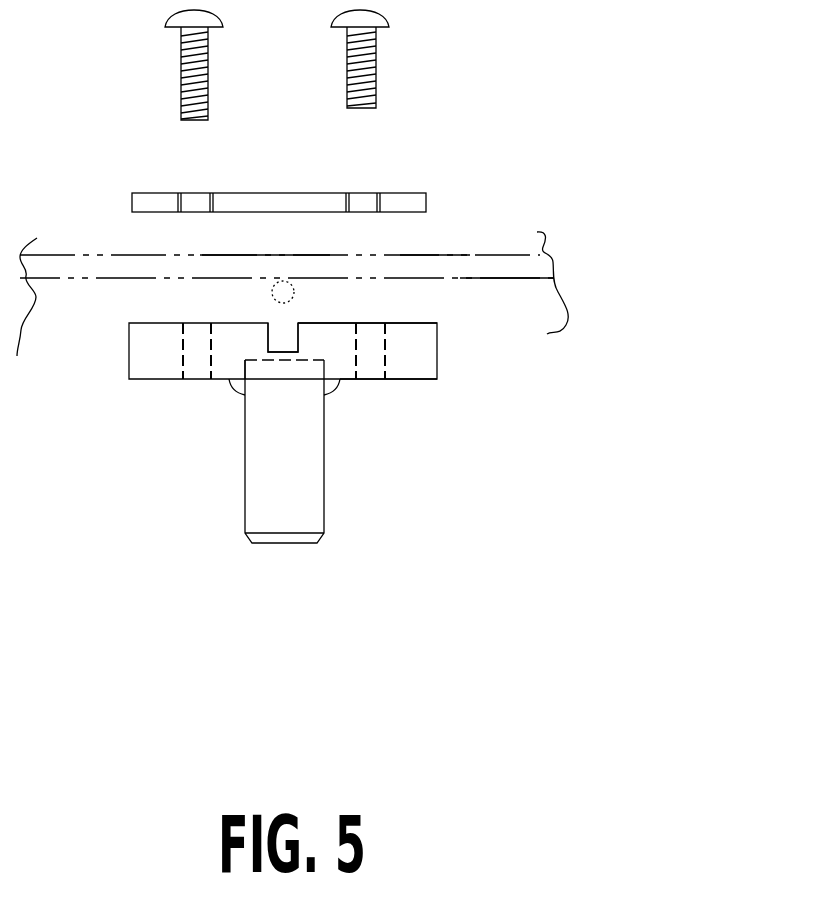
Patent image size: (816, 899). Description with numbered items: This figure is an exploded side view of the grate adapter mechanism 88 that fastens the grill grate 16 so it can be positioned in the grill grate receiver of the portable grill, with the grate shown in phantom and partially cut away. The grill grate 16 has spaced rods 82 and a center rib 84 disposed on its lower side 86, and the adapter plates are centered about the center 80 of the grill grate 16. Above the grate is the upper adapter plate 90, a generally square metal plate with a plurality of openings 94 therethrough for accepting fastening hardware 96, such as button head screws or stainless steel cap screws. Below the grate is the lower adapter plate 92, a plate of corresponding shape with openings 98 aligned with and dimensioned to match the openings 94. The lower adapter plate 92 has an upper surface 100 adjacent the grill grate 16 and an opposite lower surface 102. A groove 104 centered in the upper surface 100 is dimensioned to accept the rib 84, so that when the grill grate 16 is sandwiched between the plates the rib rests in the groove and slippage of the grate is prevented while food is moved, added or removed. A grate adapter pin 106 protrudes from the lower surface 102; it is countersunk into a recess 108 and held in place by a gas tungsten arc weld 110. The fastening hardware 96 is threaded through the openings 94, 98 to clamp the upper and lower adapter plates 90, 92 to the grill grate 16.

The grill grate 16 is at (505, 255).
The center of the grill grate 80 is at (283, 255).
The rods 82 is at (437, 253).
The center rib 84 is at (296, 297).
The lower side of the grill grate 86 is at (510, 279).
The grate adapter mechanism 88 is at (505, 122).
The upper adapter plate 90 is at (404, 193).
The lower adapter plate 92 is at (437, 353).
The openings 94 is at (192, 193).
The fastening hardware 96 is at (347, 69).
The openings 98 is at (182, 379).
The upper surface 100 is at (410, 322).
The lower surface 102 is at (418, 379).
The groove 104 is at (272, 340).
The grate adapter pin 106 is at (324, 497).
The recess 108 is at (243, 366).
The gas tungsten arc weld 110 is at (238, 393).